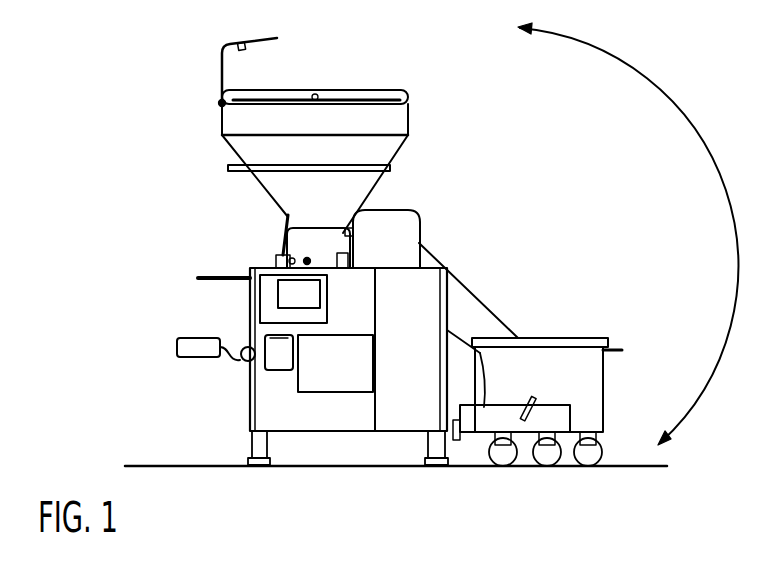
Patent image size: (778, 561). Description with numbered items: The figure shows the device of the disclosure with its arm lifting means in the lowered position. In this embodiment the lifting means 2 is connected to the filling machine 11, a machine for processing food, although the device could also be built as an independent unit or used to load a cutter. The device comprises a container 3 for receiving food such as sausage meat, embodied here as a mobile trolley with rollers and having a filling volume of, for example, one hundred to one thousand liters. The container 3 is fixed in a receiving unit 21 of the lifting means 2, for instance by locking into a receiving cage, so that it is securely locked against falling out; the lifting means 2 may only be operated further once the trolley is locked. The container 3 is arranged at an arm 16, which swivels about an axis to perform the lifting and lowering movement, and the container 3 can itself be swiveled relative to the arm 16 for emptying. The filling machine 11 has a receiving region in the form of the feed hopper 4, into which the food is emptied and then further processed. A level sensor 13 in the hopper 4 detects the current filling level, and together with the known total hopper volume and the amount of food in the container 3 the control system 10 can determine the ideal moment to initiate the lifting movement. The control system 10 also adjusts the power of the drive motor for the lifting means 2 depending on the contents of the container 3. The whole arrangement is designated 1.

The filling machine arrangement 1 is at (500, 126).
The lifting means 2 is at (421, 232).
The container 3 is at (552, 338).
The feed hopper 4 is at (222, 148).
The control system 10 is at (298, 385).
The filling machine 11 is at (283, 237).
The level sensor 13 is at (366, 213).
The arm 16 is at (488, 303).
The receiving unit 21 is at (480, 427).